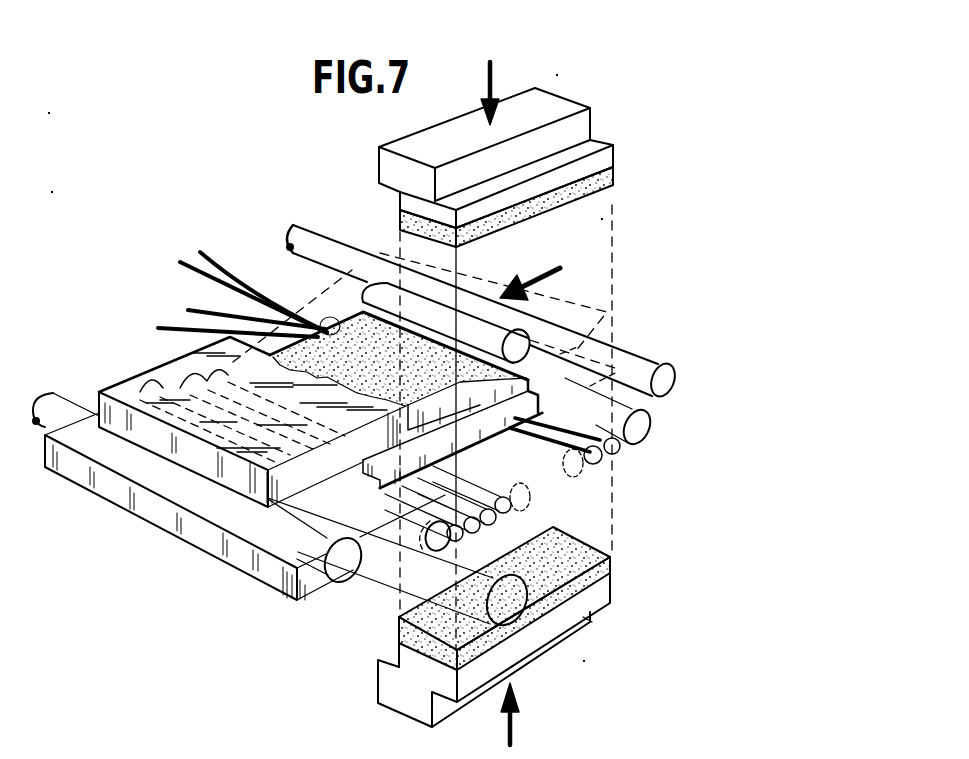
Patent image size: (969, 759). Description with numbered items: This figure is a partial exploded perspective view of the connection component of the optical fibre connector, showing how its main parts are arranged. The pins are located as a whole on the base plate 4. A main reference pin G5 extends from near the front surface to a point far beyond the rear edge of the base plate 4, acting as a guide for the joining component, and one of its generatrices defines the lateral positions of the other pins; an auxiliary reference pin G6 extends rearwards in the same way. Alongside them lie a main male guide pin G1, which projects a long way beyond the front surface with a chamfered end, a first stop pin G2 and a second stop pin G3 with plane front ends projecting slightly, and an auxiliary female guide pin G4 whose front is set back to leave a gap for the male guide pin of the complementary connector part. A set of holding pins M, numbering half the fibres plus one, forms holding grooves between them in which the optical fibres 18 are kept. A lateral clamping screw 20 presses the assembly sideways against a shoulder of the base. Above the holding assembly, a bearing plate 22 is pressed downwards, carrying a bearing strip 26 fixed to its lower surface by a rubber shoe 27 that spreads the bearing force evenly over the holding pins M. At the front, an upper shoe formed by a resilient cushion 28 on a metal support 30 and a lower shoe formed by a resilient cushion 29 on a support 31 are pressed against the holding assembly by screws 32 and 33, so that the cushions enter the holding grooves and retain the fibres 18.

The base plate 4 is at (153, 502).
The optical fibres 18 is at (216, 268).
The lateral clamping screw 20 is at (546, 265).
The bearing plate 22 is at (138, 382).
The bearing strip 26 is at (515, 447).
The rubber shoe 27 is at (340, 355).
The resilient cushion 28 is at (601, 183).
The resilient cushion 29 is at (612, 572).
The metal support 30 is at (608, 165).
The support 31 is at (590, 598).
The screw 32 is at (486, 72).
The screw 33 is at (518, 732).
The holding pins M is at (608, 455).
The main male guide pin G1 is at (423, 568).
The first stop pin G2 is at (417, 518).
The second stop pin G3 is at (641, 436).
The auxiliary female guide pin G4 is at (522, 340).
The main reference pin G5 is at (270, 522).
The auxiliary reference pin G6 is at (622, 354).